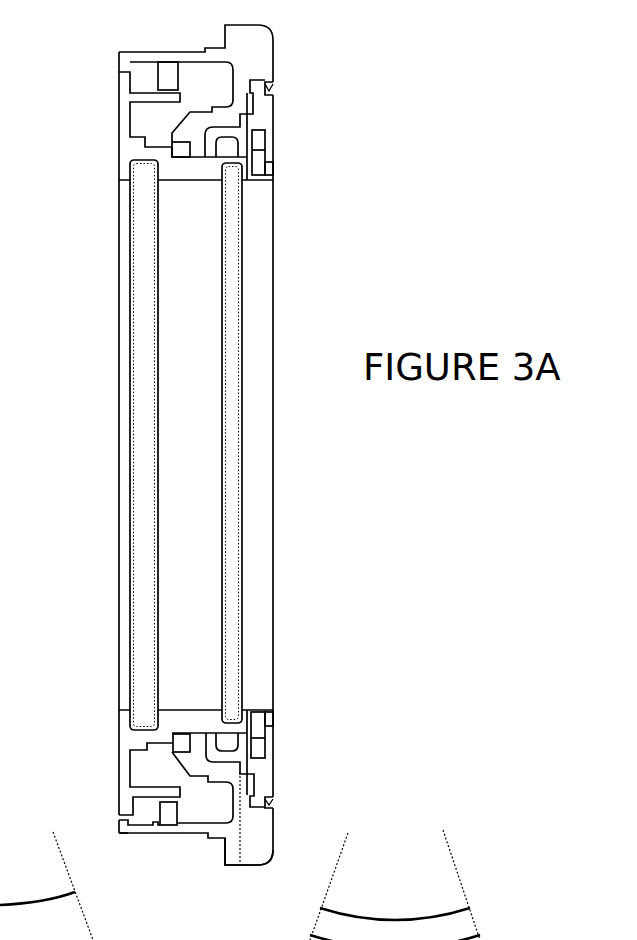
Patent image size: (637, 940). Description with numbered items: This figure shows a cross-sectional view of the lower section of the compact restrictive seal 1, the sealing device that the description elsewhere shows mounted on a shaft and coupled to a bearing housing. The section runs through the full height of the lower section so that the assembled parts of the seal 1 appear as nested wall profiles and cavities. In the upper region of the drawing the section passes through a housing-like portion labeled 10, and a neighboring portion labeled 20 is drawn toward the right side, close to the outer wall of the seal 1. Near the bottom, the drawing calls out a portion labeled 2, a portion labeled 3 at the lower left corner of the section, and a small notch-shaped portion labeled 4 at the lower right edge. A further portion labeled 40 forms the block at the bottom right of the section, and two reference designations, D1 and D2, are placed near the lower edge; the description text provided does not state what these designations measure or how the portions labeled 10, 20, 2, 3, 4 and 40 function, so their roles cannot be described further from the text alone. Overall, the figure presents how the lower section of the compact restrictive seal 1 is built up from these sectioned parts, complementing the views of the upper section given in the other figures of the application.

The compact restrictive seal 1 is at (303, 273).
The housing 10 is at (127, 742).
The cover member 20 is at (263, 758).
The bottom plate 2 is at (143, 815).
The foot portion 3 is at (120, 813).
The engaging notch 4 is at (273, 802).
The rib portion 40 is at (228, 867).
The distance D1 is at (118, 837).
The distance D2 is at (257, 843).